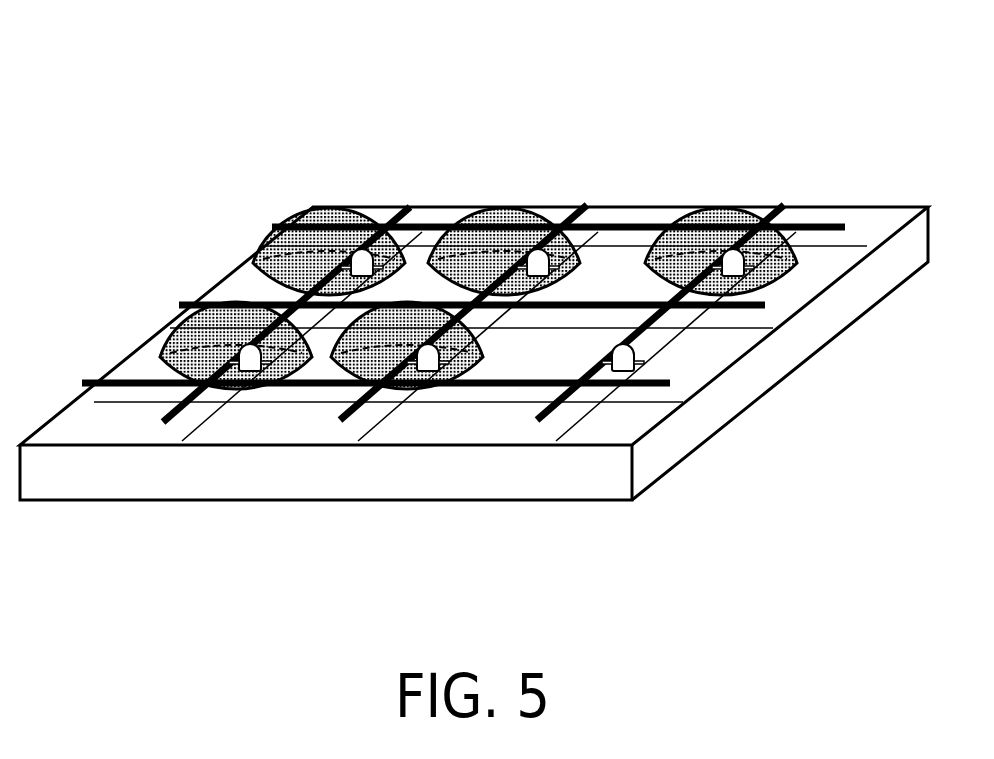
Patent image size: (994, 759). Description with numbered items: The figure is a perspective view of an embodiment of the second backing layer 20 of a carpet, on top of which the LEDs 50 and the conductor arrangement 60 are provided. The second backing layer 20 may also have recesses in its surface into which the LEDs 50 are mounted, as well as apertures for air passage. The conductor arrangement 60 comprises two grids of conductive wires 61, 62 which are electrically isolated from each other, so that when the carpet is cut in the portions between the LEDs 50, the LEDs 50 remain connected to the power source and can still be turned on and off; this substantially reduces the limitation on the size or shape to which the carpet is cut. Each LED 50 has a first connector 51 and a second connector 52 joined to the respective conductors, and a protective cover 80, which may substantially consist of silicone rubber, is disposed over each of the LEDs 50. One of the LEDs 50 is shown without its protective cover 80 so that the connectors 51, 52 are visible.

The second backing layer 20 is at (242, 105).
The LED 50 is at (491, 310).
The first connector 51 is at (603, 363).
The second connector 52 is at (652, 363).
The conductor arrangement 60 is at (474, 415).
The conductive wires 61 is at (160, 422).
The conductive wires 62 is at (197, 428).
The protective cover 80 is at (273, 241).